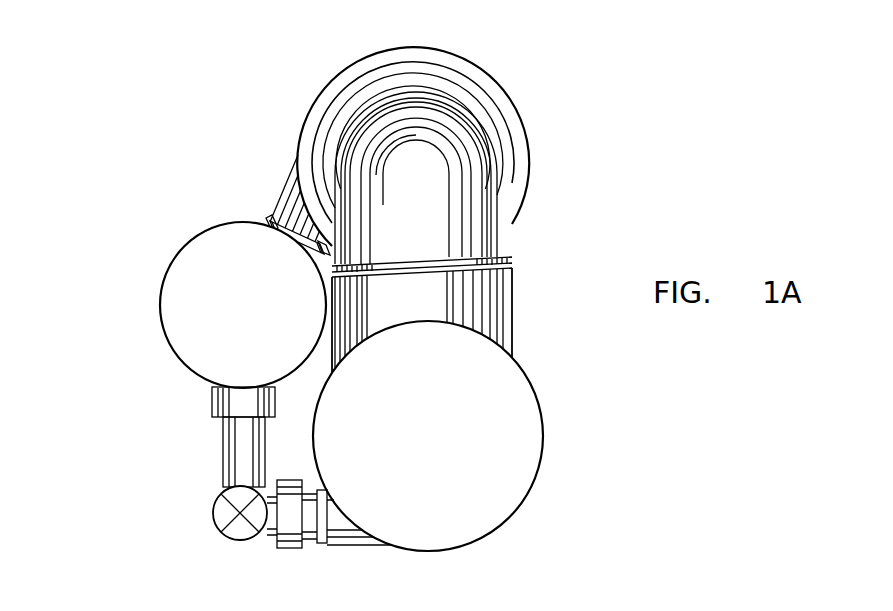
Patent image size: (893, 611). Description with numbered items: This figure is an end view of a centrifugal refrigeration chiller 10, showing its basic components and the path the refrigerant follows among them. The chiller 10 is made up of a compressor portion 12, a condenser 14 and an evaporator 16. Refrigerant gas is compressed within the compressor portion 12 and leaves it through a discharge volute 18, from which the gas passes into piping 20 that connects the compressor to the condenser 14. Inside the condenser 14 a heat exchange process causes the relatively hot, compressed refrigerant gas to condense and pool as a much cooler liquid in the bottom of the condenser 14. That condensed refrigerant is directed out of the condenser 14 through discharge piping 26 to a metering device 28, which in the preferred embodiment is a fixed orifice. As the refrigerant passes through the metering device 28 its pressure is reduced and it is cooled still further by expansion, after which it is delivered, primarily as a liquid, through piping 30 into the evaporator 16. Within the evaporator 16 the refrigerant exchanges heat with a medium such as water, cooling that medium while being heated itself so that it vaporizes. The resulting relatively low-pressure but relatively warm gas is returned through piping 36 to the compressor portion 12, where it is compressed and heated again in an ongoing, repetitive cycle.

The chiller 10 is at (130, 299).
The compressor portion 12 is at (565, 163).
The condenser 14 is at (259, 317).
The evaporator 16 is at (442, 475).
The discharge volute 18 is at (522, 122).
The piping 20 is at (290, 192).
The discharge piping 26 is at (233, 452).
The metering device 28 is at (290, 548).
The piping 30 is at (306, 525).
The piping 36 is at (470, 222).